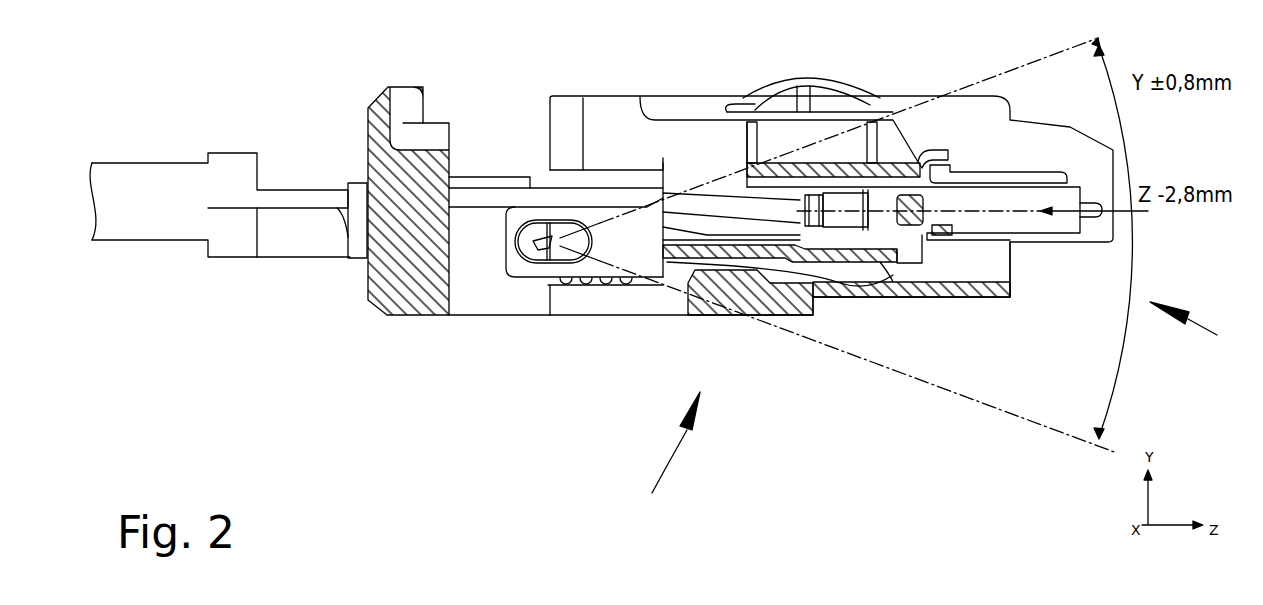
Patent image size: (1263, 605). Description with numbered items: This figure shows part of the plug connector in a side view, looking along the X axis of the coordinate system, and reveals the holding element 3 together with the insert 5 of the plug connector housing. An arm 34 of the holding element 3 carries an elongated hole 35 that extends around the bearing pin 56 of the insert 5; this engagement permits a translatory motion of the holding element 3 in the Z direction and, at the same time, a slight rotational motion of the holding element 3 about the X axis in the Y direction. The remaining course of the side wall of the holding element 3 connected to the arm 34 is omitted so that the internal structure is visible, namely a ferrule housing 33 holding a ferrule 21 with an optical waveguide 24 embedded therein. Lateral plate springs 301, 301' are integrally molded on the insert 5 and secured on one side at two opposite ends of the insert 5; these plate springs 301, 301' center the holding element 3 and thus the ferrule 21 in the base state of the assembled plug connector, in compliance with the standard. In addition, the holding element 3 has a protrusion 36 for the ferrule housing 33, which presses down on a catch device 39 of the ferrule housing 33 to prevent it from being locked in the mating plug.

The optical waveguide 24 is at (737, 208).
The plate spring 301 is at (809, 64).
The protrusion 36 is at (945, 163).
The catch device 39 is at (990, 167).
The arm 34 is at (503, 215).
The elongated hole 35 is at (572, 243).
The bearing pin 56 is at (537, 250).
The ferrule 21 is at (847, 220).
The plate spring 301' is at (796, 311).
The ferrule housing 33 is at (968, 217).
The insert 5 is at (666, 466).
The holding element 3 is at (1200, 331).